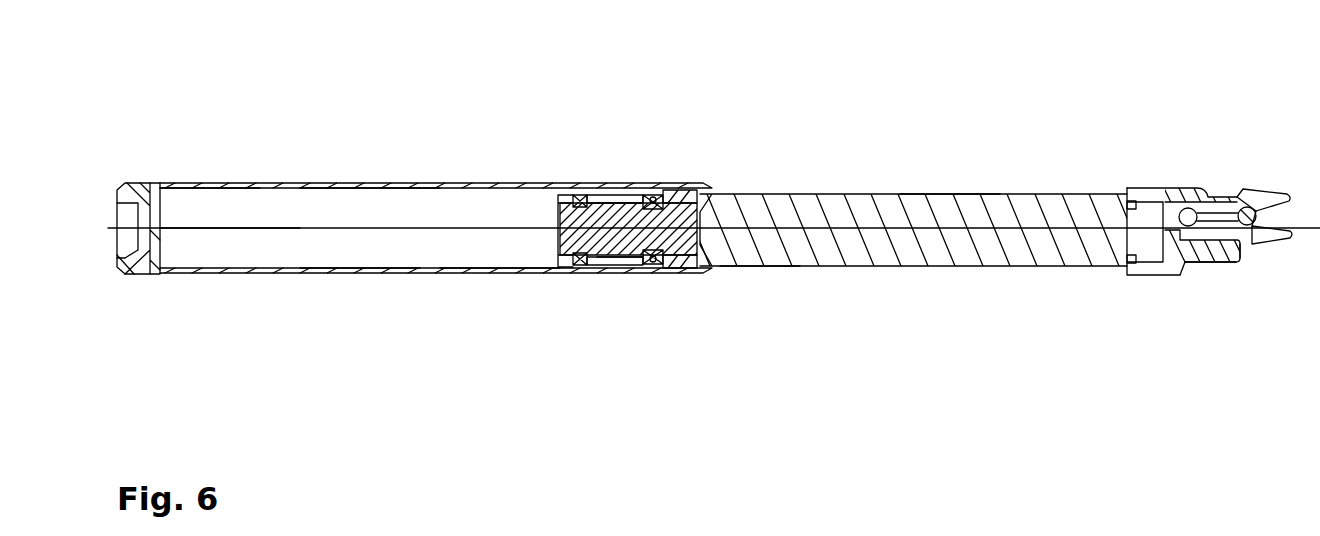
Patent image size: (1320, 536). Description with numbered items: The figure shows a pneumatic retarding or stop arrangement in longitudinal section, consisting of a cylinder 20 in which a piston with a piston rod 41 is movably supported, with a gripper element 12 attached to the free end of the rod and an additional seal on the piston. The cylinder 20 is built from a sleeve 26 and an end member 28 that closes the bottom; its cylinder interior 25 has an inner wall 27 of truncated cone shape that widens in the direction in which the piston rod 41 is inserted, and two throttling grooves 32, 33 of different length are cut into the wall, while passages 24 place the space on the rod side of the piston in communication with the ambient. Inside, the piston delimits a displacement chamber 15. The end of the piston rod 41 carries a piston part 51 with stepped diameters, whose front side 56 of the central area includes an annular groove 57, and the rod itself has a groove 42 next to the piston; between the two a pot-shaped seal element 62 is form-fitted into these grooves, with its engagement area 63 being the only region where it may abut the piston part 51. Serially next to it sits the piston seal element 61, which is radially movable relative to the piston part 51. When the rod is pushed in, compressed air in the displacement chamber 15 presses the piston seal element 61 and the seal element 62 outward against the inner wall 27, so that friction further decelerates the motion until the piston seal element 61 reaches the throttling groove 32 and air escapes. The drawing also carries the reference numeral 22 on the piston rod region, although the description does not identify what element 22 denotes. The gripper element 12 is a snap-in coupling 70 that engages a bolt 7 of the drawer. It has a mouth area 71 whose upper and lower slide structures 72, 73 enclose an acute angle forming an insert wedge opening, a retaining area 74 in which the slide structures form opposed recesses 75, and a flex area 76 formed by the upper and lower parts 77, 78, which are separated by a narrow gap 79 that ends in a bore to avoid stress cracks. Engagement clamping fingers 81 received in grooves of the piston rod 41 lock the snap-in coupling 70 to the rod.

The gripper element 12 is at (1278, 260).
The bolt 7 is at (1228, 226).
The displacement chamber 15 is at (288, 240).
The cylinder 20 is at (543, 290).
The piston rod 22 is at (700, 185).
The passages 24 is at (703, 272).
The cylinder interior 25 is at (483, 210).
The sleeve 26 is at (360, 272).
The inner wall 27 is at (370, 191).
The end member 28 is at (150, 243).
The throttling groove 32 is at (448, 268).
The throttling groove 33 is at (182, 190).
The piston rod 41 is at (950, 240).
The groove 42 is at (678, 184).
The piston part 51 is at (557, 273).
The front side 56 is at (647, 190).
The annular groove 57 is at (593, 193).
The piston seal element 61 is at (578, 195).
The seal element 62 is at (627, 273).
The engagement area 63 is at (680, 273).
The snap-in coupling 70 is at (1165, 273).
The mouth area 71 is at (1293, 207).
The upper slide structure 72 is at (1258, 191).
The lower slide structure 73 is at (1270, 236).
The retaining area 74 is at (1243, 189).
The recesses 75 is at (1232, 194).
The flex area 76 is at (1208, 229).
The upper part 77 is at (1208, 198).
The lower part 78 is at (1183, 240).
The gap 79 is at (1190, 202).
The engagement clamping fingers 81 is at (1127, 265).